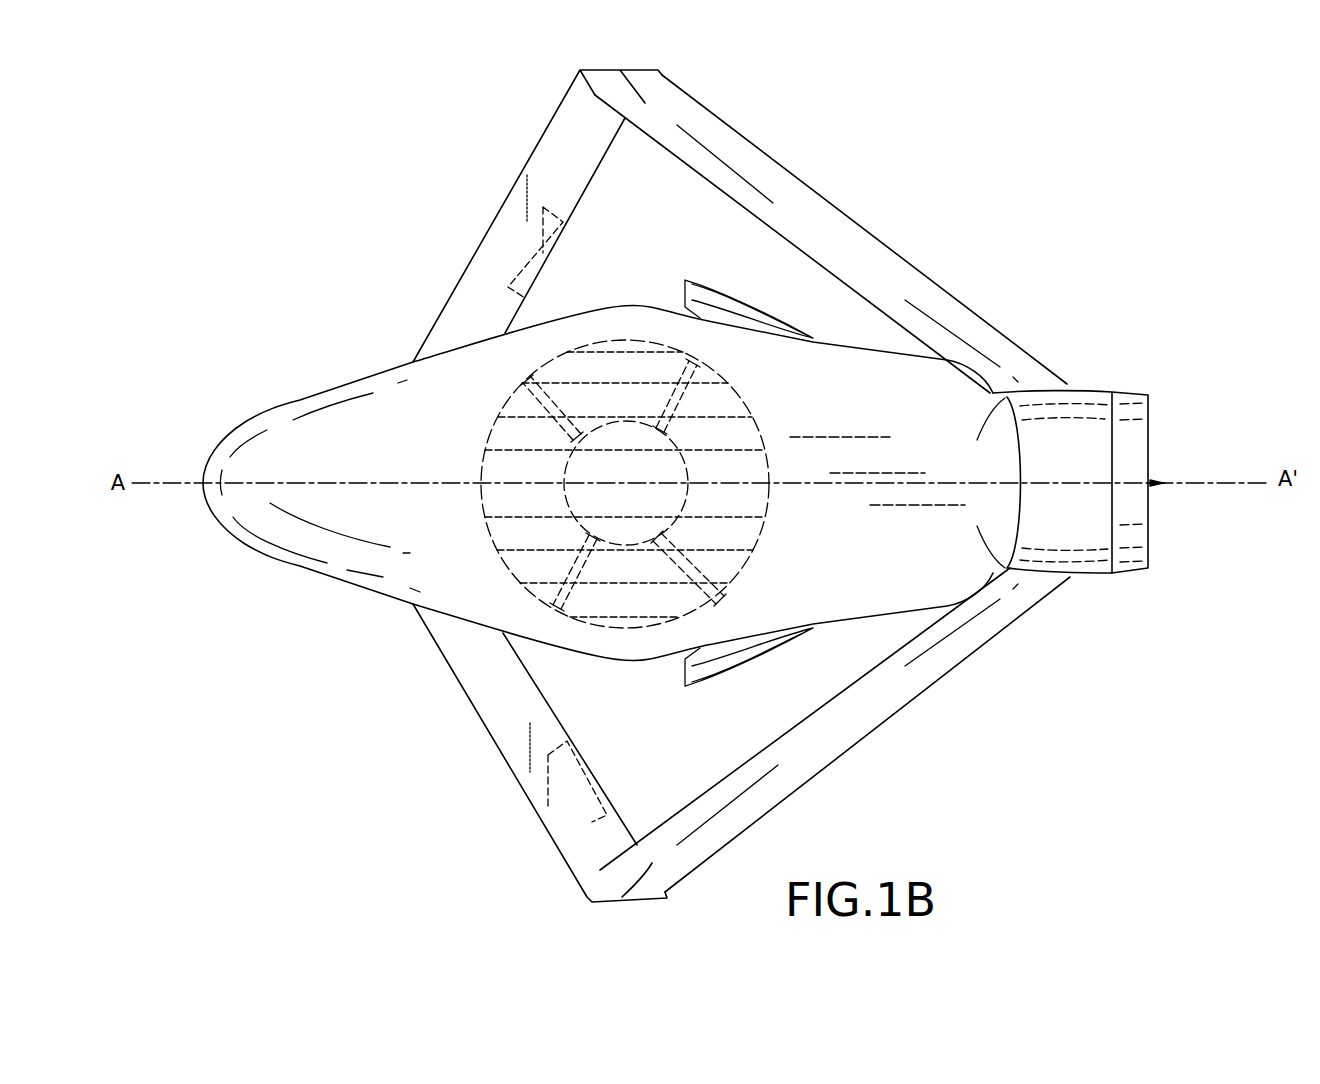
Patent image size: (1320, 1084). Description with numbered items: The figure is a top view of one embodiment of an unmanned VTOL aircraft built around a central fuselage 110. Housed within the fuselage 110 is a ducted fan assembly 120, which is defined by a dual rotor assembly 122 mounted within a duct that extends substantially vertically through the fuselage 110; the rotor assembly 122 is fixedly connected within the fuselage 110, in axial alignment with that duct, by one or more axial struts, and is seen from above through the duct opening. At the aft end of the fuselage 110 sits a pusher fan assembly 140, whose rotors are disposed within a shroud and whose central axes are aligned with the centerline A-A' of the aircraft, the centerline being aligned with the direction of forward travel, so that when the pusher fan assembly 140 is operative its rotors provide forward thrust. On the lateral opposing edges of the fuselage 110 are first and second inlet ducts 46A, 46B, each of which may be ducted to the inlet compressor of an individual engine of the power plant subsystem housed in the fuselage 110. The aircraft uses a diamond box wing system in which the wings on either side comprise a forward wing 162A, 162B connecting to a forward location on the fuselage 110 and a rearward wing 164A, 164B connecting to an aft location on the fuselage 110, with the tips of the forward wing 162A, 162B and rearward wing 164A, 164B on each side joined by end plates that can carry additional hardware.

The fuselage 110 is at (803, 574).
The ducted fan assembly 120 is at (600, 333).
The dual rotor assembly 122 is at (553, 389).
The pusher fan assembly 140 is at (1077, 437).
The forward wing 162A is at (491, 720).
The forward wing 162B is at (490, 250).
The rearward wing 164A is at (826, 720).
The rearward wing 164B is at (826, 265).
The first inlet duct 46A is at (690, 677).
The second inlet duct 46B is at (703, 290).